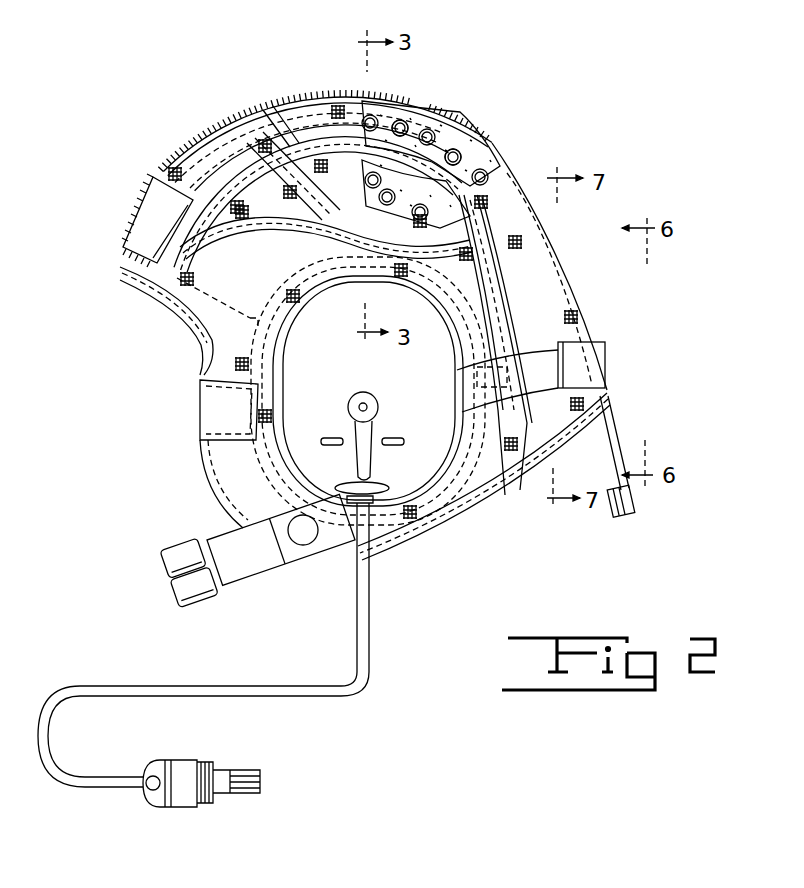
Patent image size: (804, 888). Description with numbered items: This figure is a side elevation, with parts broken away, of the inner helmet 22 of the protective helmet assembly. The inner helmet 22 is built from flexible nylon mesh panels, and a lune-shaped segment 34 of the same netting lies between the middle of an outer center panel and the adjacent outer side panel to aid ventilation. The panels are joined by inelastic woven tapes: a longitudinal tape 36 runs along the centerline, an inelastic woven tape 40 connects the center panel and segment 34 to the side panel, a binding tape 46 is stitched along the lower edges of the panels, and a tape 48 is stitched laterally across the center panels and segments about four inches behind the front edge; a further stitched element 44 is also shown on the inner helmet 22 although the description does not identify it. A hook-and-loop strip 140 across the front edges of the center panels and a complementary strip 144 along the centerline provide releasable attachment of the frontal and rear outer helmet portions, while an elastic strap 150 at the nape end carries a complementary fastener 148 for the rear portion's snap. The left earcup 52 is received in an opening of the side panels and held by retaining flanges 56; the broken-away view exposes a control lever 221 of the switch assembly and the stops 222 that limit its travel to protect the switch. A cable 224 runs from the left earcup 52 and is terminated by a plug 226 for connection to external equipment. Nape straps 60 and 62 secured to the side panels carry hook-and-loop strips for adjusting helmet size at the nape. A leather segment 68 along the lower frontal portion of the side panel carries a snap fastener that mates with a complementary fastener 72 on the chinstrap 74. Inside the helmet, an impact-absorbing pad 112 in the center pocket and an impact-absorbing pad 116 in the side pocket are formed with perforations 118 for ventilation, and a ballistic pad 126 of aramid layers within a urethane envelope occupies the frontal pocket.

The inner helmet 22 is at (647, 306).
The lune-shaped segment 34 is at (273, 183).
The longitudinal tape 36 is at (520, 177).
The inelastic woven tape 40 is at (227, 185).
The cross strap 44 is at (330, 232).
The binding tape 46 is at (157, 293).
The tape 48 is at (276, 113).
The left earcup 52 is at (381, 377).
The retaining flanges 56 is at (288, 332).
The nape strap 60 is at (484, 377).
The nape strap 62 is at (607, 343).
The segment 68 is at (200, 452).
The complementary fastener 72 is at (310, 547).
The chinstrap 74 is at (250, 577).
The impact-absorbing pad 112 is at (467, 147).
The impact-absorbing pad 116 is at (408, 183).
The perforations 118 is at (403, 127).
The ballistic pad 126 is at (250, 318).
The complementary strip 140 is at (140, 222).
The complementary strip 144 is at (310, 93).
The complementary fastener 148 is at (617, 517).
The elastic strap 150 is at (607, 447).
The control lever 221 is at (340, 457).
The stops 222 is at (388, 437).
The cable 224 is at (370, 668).
The plug 226 is at (187, 753).